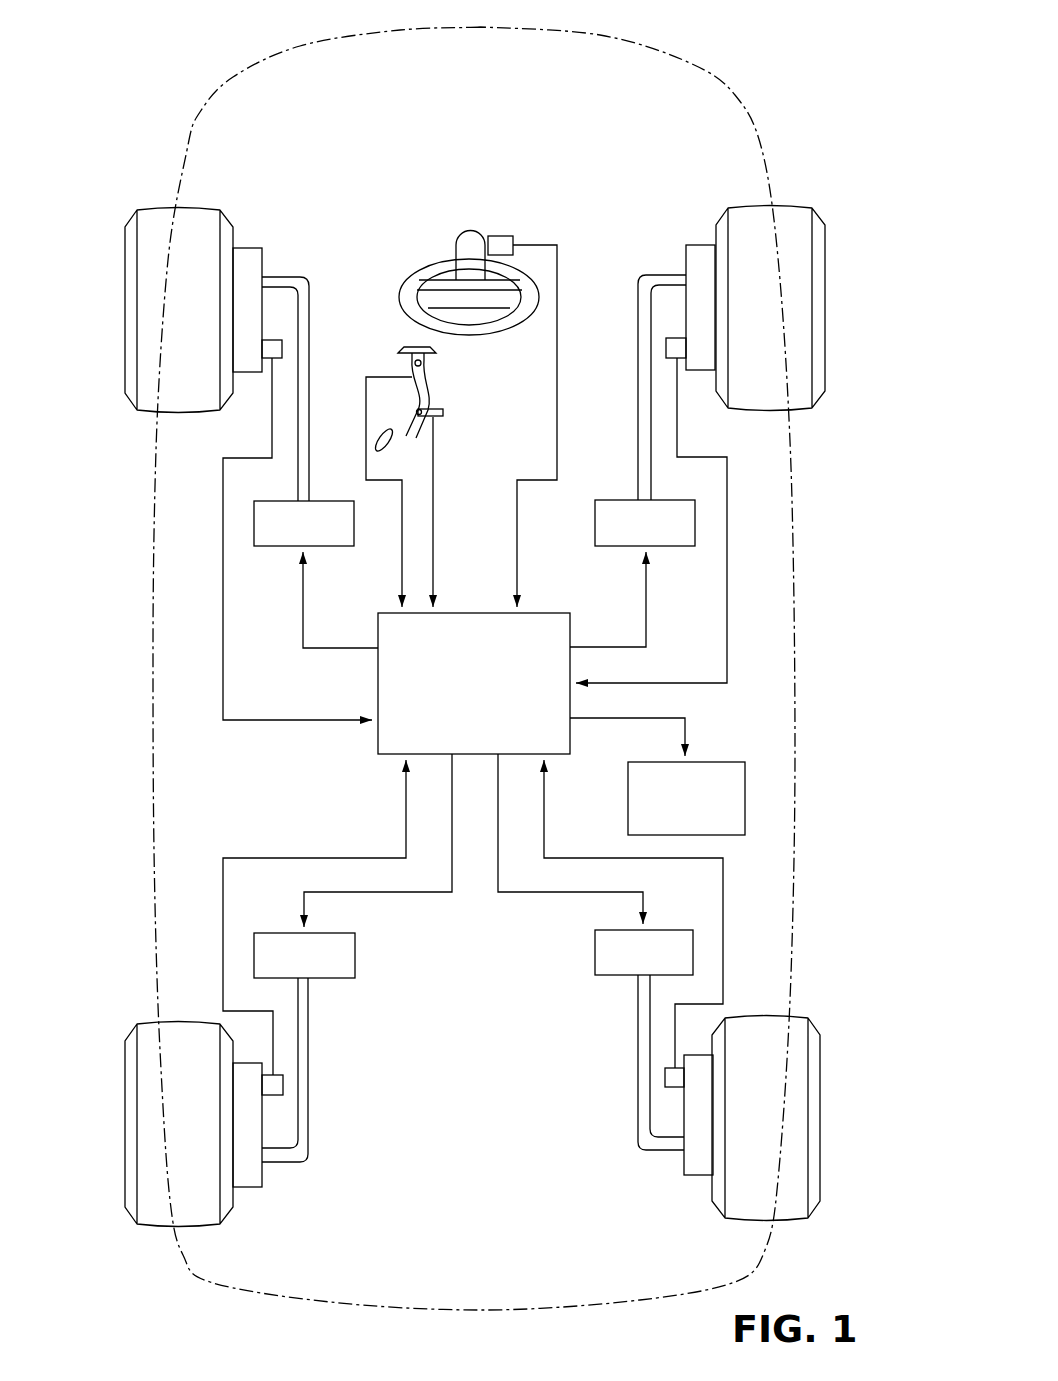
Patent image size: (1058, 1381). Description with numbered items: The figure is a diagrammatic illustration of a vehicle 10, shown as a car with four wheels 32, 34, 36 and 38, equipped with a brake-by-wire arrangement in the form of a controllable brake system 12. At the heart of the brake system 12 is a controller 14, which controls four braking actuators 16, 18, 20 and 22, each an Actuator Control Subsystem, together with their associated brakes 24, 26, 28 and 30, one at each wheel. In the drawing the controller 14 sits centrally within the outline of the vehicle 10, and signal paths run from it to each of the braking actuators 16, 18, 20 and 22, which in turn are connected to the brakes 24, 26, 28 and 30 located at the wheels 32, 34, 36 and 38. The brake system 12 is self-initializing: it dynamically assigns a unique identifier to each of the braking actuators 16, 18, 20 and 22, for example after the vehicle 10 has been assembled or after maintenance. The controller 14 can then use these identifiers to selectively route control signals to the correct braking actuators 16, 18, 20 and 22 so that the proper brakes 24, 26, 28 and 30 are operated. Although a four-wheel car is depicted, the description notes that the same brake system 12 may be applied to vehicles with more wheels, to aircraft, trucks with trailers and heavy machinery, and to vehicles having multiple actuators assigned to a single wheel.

The vehicle 10 is at (724, 56).
The controllable brake system 12 is at (515, 203).
The controller 14 is at (378, 740).
The braking actuator 16 is at (275, 548).
The braking actuator 18 is at (675, 548).
The braking actuator 20 is at (337, 978).
The braking actuator 22 is at (610, 975).
The brake 24 is at (256, 255).
The brake 26 is at (697, 253).
The brake 28 is at (252, 1178).
The brake 30 is at (695, 1168).
The wheel 32 is at (155, 222).
The wheel 34 is at (795, 218).
The wheel 36 is at (156, 1212).
The wheel 38 is at (790, 1200).